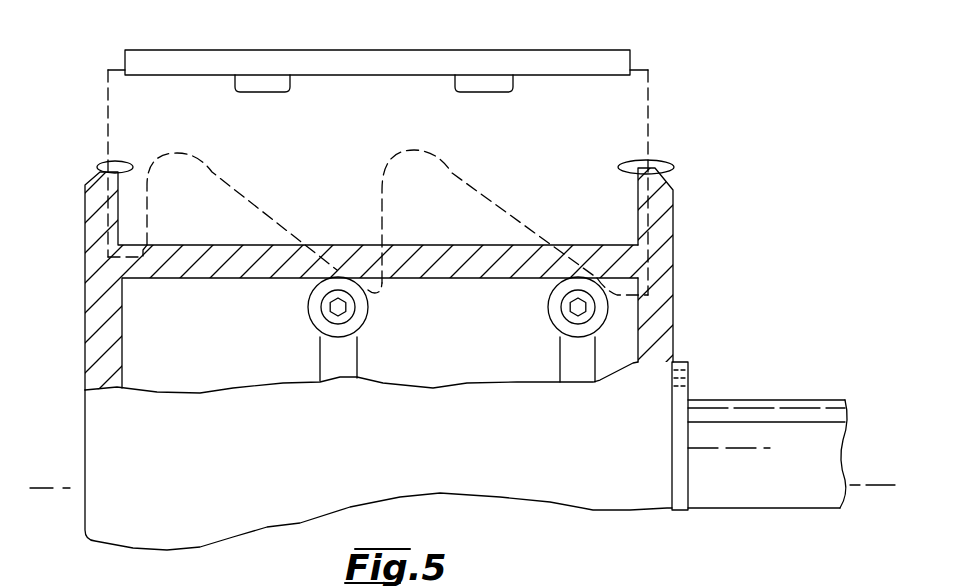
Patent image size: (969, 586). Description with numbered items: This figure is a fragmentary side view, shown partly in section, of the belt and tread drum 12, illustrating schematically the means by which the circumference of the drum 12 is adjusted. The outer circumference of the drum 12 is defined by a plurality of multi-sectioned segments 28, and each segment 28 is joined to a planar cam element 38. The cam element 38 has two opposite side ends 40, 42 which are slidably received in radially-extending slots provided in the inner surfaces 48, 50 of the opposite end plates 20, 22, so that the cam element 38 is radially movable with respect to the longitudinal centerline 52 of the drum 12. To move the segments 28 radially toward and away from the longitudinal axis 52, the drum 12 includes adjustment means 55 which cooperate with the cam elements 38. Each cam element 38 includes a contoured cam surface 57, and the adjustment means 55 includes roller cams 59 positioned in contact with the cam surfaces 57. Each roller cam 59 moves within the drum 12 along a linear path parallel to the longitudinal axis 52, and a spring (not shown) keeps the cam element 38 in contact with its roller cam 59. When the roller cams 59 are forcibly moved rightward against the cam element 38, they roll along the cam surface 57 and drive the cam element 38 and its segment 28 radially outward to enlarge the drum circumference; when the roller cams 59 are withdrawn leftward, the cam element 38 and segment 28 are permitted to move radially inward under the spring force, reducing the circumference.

The belt and tread drum 12 is at (100, 100).
The segment 28 is at (497, 45).
The side end of cam element 40 is at (108, 129).
The side end of cam element 42 is at (650, 135).
The inner surface of end plate 48 is at (112, 161).
The inner surface of end plate 50 is at (675, 166).
The cam element 38 is at (547, 145).
The cam surface 57 is at (220, 186).
The end plate 20 is at (100, 236).
The end plate 22 is at (674, 231).
The adjustment means 55 is at (313, 346).
The roller cam 59 is at (548, 310).
The longitudinal centerline 52 is at (38, 487).